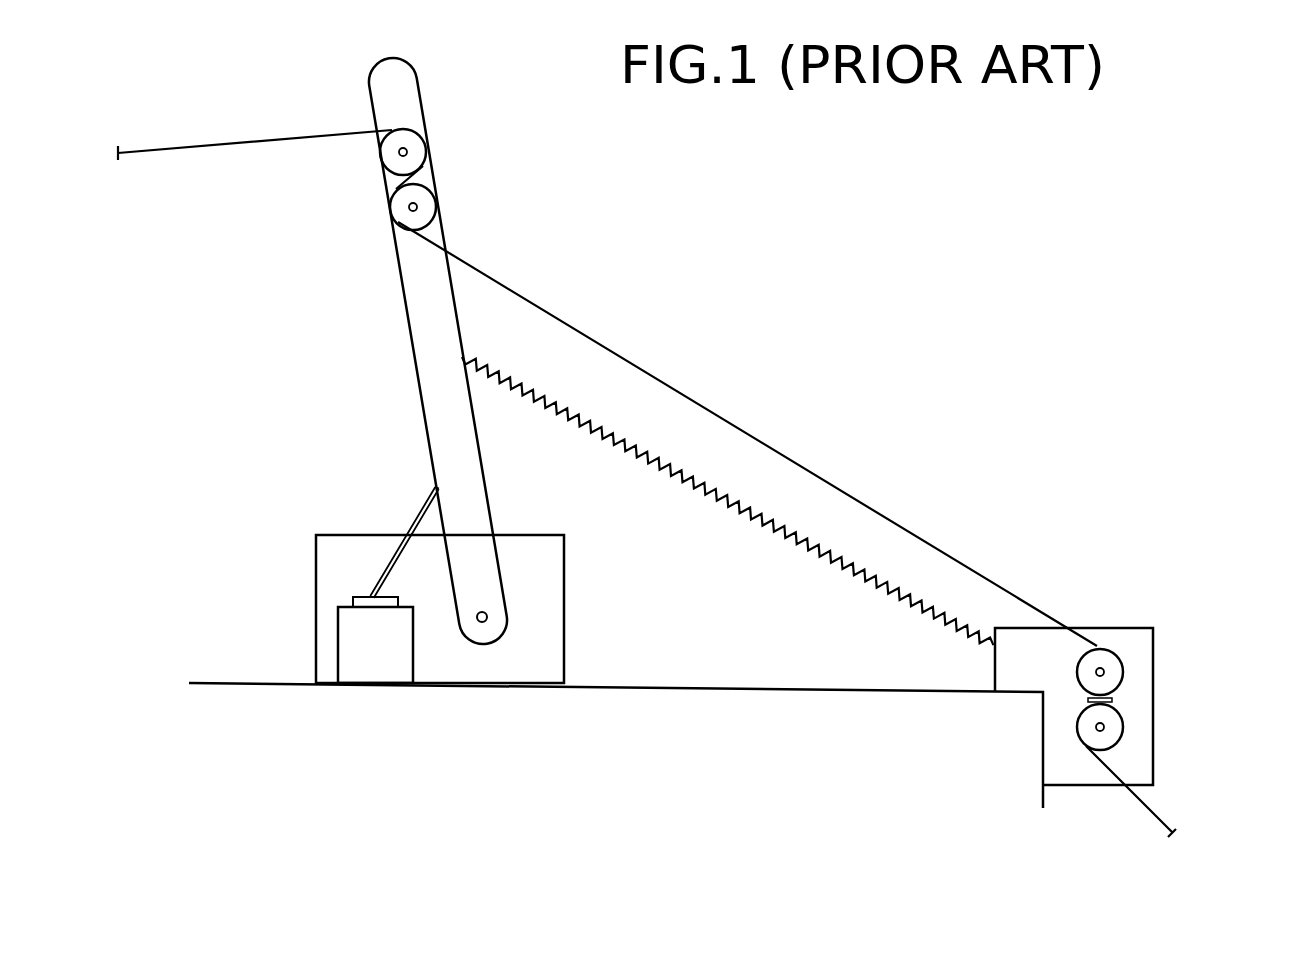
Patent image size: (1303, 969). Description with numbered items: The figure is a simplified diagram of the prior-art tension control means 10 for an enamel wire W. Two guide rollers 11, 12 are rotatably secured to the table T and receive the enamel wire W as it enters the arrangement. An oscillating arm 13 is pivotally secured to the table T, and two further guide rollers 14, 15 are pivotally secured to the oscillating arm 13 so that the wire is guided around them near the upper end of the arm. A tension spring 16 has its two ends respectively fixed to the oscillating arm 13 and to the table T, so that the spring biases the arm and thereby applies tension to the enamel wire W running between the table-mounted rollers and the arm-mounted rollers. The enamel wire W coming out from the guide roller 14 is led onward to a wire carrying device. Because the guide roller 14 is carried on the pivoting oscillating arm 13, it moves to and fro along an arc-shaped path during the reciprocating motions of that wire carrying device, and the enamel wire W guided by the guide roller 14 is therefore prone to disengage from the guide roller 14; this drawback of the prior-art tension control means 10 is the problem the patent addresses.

The tension control means 10 is at (647, 355).
The guide roller 11 is at (1117, 735).
The guide roller 12 is at (1115, 675).
The oscillating arm 13 is at (424, 305).
The guide roller 14 is at (420, 150).
The guide roller 15 is at (430, 210).
The tension spring 16 is at (700, 485).
The enamel wire W is at (763, 437).
The table T is at (698, 682).